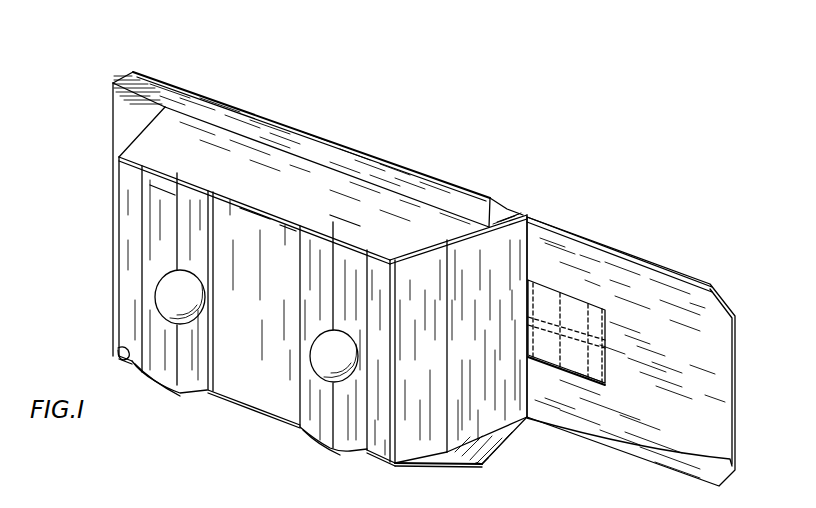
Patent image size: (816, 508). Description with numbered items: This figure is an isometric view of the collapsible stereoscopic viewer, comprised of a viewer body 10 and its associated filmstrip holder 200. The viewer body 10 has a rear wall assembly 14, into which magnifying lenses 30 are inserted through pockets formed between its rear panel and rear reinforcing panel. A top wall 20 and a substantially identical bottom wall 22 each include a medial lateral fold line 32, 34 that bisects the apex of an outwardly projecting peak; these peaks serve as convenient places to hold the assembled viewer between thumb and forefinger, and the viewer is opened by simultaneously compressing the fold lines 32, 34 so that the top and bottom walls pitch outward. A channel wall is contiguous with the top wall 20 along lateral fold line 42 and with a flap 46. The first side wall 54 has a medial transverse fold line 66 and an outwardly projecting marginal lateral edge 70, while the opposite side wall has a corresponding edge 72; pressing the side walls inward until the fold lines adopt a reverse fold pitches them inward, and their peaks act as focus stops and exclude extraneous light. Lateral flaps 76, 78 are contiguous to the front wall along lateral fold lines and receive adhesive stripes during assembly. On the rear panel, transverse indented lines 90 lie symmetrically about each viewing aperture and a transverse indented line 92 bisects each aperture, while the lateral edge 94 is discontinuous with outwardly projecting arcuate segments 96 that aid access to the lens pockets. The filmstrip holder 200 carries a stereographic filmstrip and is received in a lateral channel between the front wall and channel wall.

The viewer body 10 is at (455, 108).
The rear wall assembly 14 is at (263, 305).
The top wall 20 is at (326, 209).
The bottom wall 22 is at (440, 467).
The magnifying lenses 30 is at (256, 326).
The medial lateral fold line 32 is at (318, 150).
The medial lateral fold line 34 is at (482, 466).
The lateral fold line 42 is at (322, 134).
The flap 46 is at (481, 466).
The first side wall 54 is at (487, 342).
The medial transverse fold line 66 is at (447, 260).
The marginal lateral edge 70 is at (413, 458).
The marginal lateral edge 72 is at (505, 403).
The lateral flap 76 is at (262, 115).
The lateral flap 78 is at (488, 453).
The transverse indented lines 90 is at (213, 218).
The transverse indented line 92 is at (180, 241).
The lateral edge 94 is at (118, 350).
The arcuate segments 96 is at (188, 394).
The filmstrip holder 200 is at (686, 197).